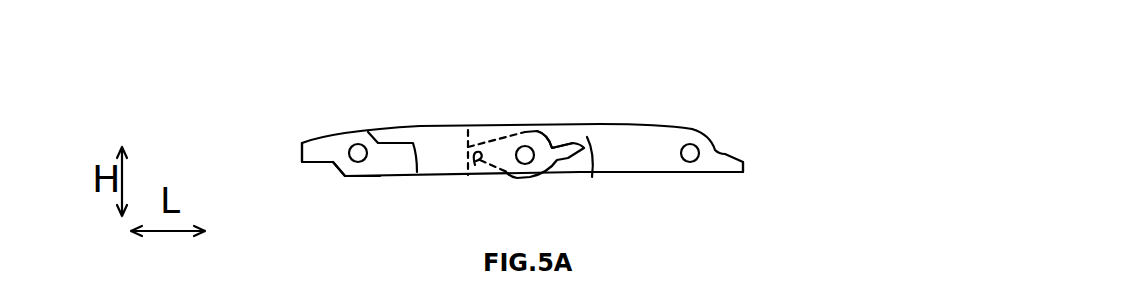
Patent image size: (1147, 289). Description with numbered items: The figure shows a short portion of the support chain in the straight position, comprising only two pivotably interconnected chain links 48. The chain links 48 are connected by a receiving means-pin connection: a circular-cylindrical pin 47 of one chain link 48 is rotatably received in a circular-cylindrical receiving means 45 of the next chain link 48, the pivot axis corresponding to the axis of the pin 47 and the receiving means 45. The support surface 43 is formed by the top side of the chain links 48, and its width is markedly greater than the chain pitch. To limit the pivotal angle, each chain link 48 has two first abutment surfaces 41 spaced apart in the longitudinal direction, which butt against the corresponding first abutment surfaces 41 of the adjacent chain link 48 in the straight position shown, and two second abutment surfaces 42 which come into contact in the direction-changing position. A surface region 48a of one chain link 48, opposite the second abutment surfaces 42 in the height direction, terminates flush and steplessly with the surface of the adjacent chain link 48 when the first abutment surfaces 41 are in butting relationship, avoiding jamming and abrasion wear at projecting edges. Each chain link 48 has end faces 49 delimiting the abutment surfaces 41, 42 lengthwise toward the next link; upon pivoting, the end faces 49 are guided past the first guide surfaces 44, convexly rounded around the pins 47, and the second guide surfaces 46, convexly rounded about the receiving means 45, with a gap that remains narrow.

The first abutment surface 41 is at (313, 163).
The second abutment surface 42 is at (381, 215).
The support surface 43 is at (452, 104).
The first guide surface 44 is at (343, 177).
The receiving means 45 is at (687, 148).
The second guide surface 46 is at (707, 137).
The pin 47 is at (356, 150).
The chain link 48 is at (643, 143).
The surface region 48a is at (550, 198).
The end face 49 is at (300, 148).